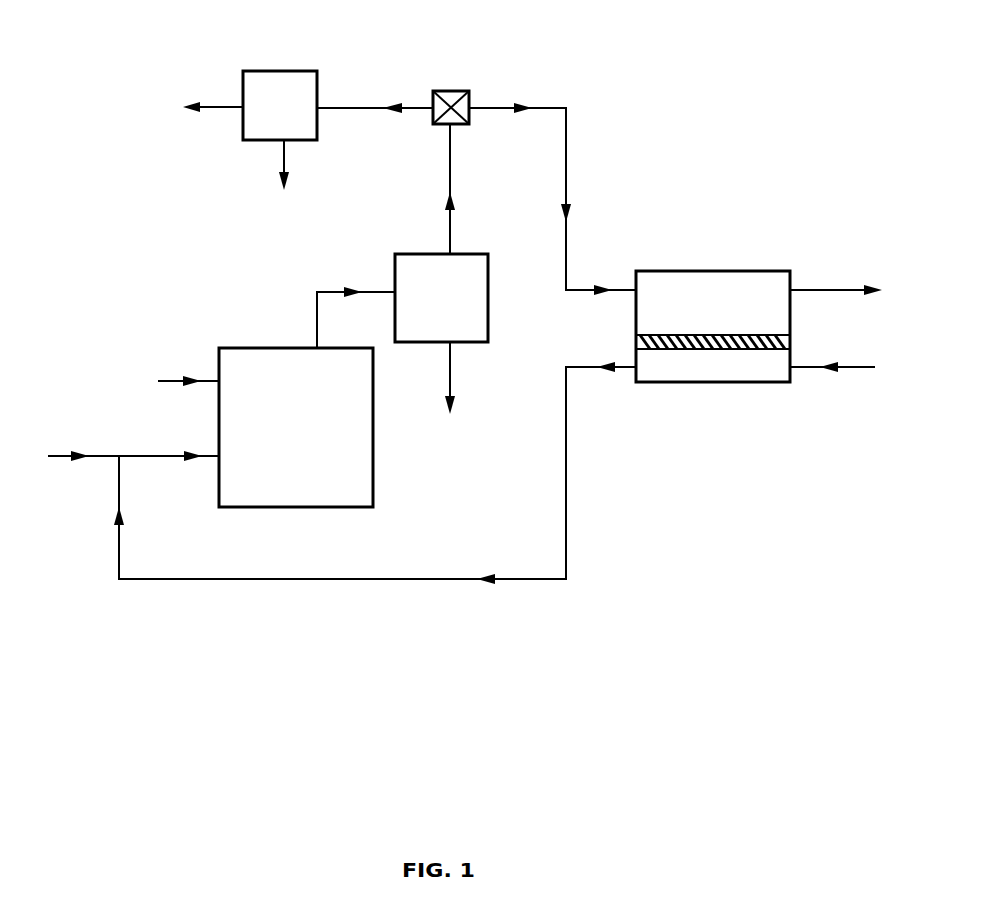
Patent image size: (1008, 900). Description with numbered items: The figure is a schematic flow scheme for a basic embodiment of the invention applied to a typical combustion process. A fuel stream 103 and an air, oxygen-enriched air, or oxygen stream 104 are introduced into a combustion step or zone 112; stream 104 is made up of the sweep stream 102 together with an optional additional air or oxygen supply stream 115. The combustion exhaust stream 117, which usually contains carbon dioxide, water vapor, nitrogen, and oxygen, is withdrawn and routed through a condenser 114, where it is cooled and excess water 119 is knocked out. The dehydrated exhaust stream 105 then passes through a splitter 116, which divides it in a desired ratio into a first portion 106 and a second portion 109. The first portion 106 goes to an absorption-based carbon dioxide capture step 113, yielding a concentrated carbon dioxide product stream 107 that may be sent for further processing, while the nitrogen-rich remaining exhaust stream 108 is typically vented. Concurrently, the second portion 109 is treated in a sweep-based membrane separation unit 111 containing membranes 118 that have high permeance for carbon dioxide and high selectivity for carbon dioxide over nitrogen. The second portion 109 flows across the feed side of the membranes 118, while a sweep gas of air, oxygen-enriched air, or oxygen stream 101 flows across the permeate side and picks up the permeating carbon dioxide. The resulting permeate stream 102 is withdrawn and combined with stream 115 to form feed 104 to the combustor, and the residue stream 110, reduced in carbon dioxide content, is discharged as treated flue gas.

The air, oxygen-enriched air, or oxygen stream 101 is at (854, 368).
The sweep stream 102 is at (375, 486).
The fuel stream 103 is at (165, 382).
The air, oxygen-enriched air, or oxygen stream 104 is at (169, 446).
The dehydrated exhaust stream 105 is at (472, 189).
The first portion 106 is at (375, 96).
The concentrated carbon dioxide product stream 107 is at (285, 181).
The remaining exhaust stream 108 is at (191, 108).
The second portion 109 is at (552, 187).
The residue stream 110 is at (856, 291).
The sweep-based membrane separation unit 111 is at (752, 271).
The combustion step or zone 112 is at (257, 348).
The absorption-based carbon dioxide capture step 113 is at (275, 71).
The condenser 114 is at (488, 302).
The additional air or oxygen supply stream 115 is at (74, 446).
The splitter 116 is at (458, 91).
The combustion exhaust stream 117 is at (353, 307).
The membranes 118 is at (790, 337).
The excess water 119 is at (452, 395).